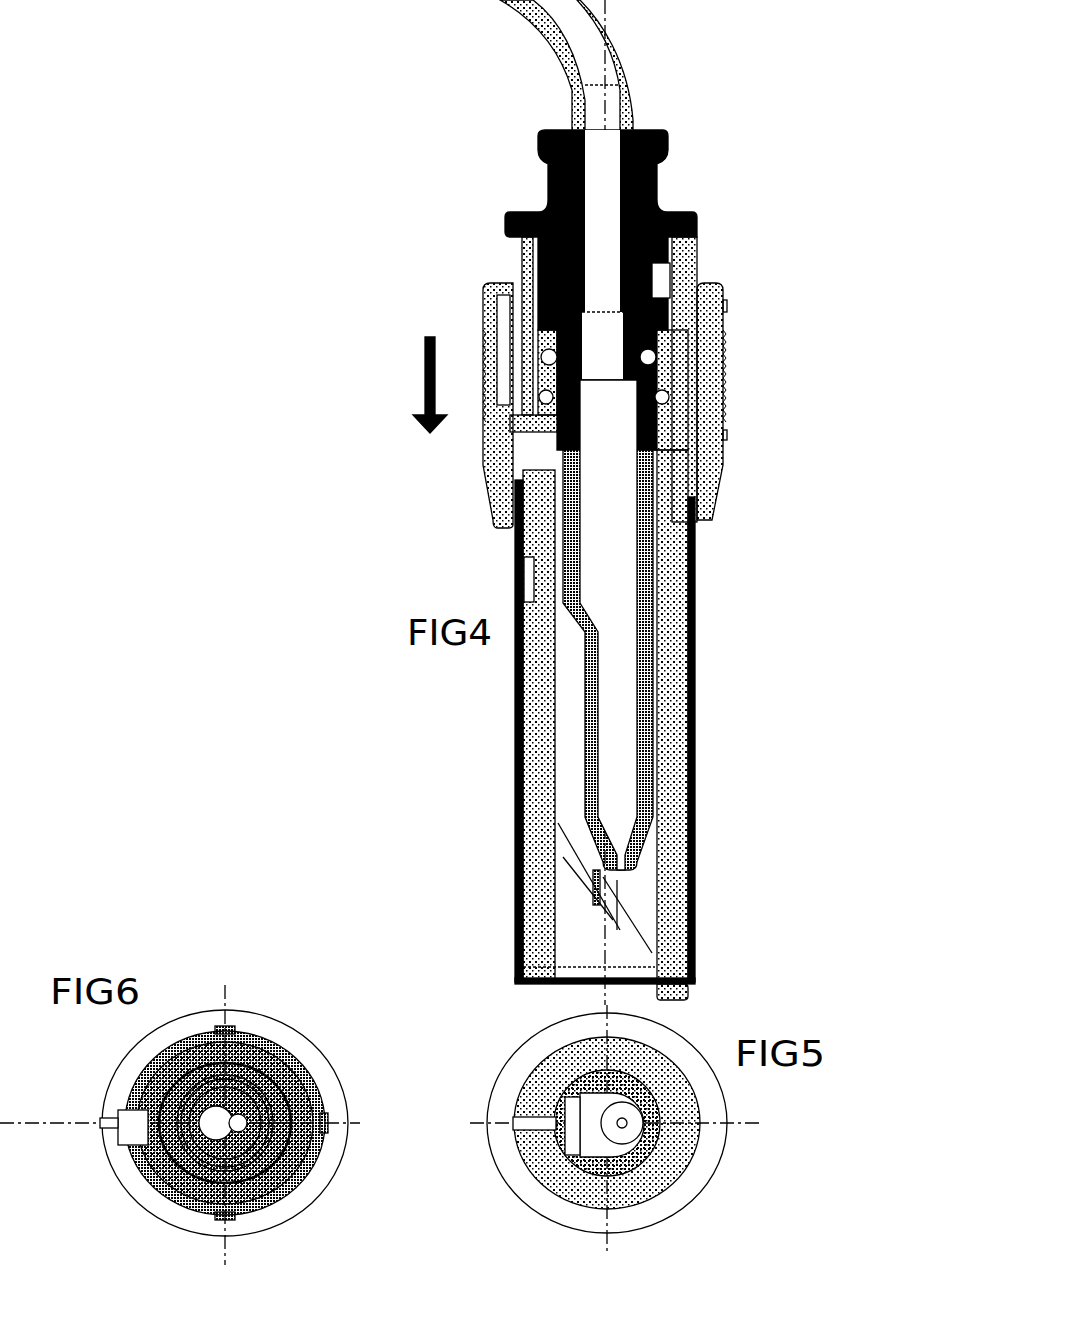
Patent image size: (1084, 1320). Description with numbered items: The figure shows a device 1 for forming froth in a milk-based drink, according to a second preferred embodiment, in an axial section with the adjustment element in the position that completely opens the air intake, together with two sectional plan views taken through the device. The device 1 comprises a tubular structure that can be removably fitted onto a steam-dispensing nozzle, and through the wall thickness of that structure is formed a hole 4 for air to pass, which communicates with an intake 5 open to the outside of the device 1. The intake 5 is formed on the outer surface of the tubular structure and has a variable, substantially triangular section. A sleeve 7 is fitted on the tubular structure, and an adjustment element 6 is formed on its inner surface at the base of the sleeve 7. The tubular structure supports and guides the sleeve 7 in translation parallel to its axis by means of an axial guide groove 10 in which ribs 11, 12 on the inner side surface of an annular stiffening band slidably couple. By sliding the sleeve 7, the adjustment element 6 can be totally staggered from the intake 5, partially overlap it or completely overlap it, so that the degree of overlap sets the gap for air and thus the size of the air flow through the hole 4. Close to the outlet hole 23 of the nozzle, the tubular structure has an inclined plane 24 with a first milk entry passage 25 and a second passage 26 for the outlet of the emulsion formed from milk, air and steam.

In FIG. 4, the device for the formation of froth 1 is at (314, 274).
In FIG. 4, the passage hole 4 is at (535, 490).
In FIG. 4, the air intake 5 is at (510, 432).
In FIG. 5, the air intake 5 is at (510, 1104).
In FIG. 6, the air intake 5 is at (100, 1118).
In FIG. 4, the adjustment element 6 is at (483, 366).
In FIG. 4, the sleeve 7 is at (725, 290).
In FIG. 5, the sleeve 7 is at (500, 1155).
In FIG. 6, the sleeve 7 is at (238, 1010).
In FIG. 6, the axial guide groove 10 is at (145, 1068).
In FIG. 6, the rib 11 is at (105, 1120).
In FIG. 6, the rib 12 is at (125, 1148).
In FIG. 4, the outlet hole 23 is at (627, 890).
In FIG. 4, the inclined plane 24 is at (600, 898).
In FIG. 4, the first milk entry passage 25 is at (588, 862).
In FIG. 4, the second passage 26 is at (608, 920).